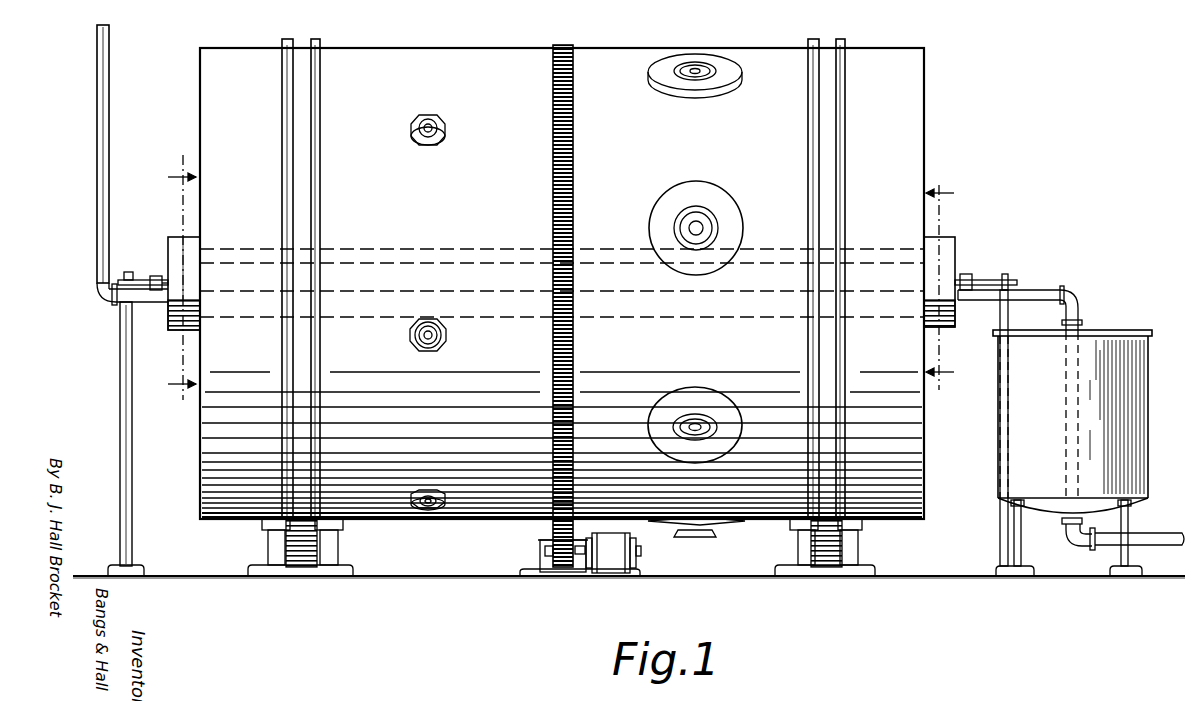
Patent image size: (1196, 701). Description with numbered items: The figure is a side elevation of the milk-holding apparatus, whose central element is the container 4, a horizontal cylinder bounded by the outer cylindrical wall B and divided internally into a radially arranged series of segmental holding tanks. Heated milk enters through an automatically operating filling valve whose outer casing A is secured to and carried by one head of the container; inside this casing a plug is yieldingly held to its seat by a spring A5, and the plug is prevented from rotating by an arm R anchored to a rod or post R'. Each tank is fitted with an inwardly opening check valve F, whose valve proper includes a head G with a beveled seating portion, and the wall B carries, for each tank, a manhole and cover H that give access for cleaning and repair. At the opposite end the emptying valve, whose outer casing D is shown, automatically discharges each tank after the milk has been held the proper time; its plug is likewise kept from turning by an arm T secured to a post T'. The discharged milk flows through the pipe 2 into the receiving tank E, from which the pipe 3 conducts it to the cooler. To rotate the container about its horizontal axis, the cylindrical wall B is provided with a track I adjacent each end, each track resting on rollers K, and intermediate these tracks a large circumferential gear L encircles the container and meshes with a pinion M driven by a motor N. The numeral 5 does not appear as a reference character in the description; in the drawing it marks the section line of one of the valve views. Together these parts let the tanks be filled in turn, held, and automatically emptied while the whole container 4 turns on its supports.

The outer cylindrical wall B is at (562, 283).
The track I is at (109, 108).
The circumferential gear L is at (575, 127).
The container 4 is at (503, 524).
The section line 5 is at (940, 287).
The outer casing of filling valve A is at (172, 247).
The spring A5 is at (160, 278).
The arm R is at (132, 310).
The rod or post R' is at (111, 439).
The check valve F is at (447, 128).
The manhole and cover H is at (726, 88).
The outer casing of emptying valve D is at (946, 246).
The arm T is at (986, 265).
The post T' is at (983, 428).
The head G is at (1020, 291).
The pipe 2 is at (1056, 288).
The receiving tank E is at (1072, 453).
The pipe 3 is at (1160, 532).
The rollers K is at (268, 546).
The motor N is at (641, 551).
The pinion M is at (560, 576).